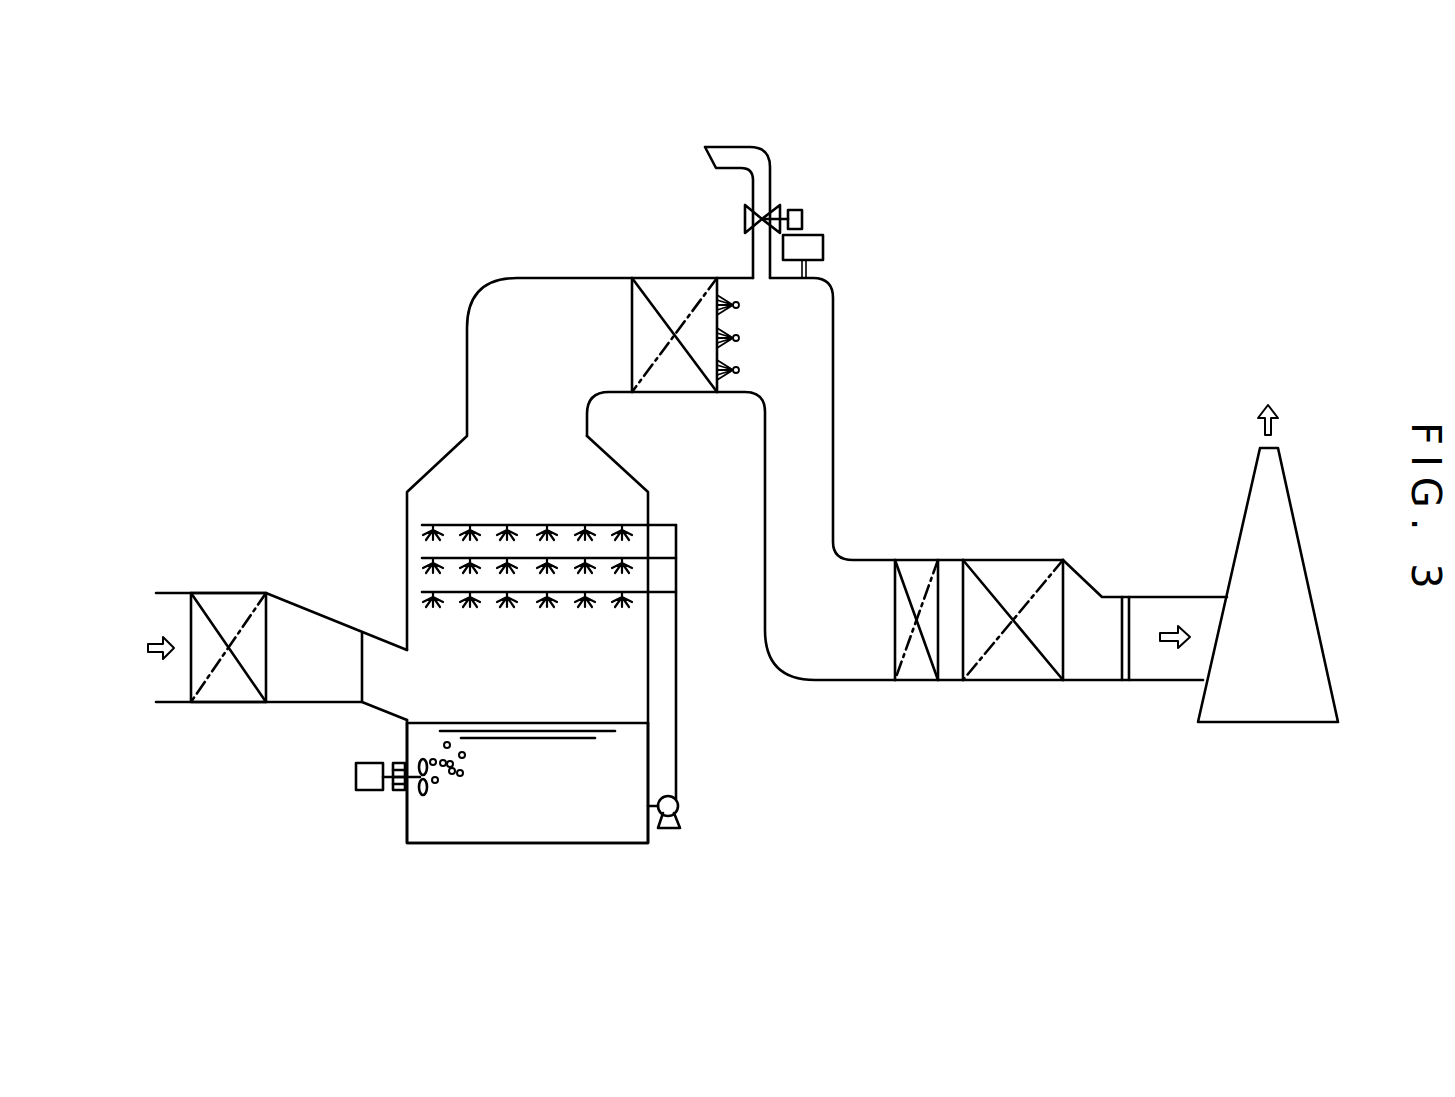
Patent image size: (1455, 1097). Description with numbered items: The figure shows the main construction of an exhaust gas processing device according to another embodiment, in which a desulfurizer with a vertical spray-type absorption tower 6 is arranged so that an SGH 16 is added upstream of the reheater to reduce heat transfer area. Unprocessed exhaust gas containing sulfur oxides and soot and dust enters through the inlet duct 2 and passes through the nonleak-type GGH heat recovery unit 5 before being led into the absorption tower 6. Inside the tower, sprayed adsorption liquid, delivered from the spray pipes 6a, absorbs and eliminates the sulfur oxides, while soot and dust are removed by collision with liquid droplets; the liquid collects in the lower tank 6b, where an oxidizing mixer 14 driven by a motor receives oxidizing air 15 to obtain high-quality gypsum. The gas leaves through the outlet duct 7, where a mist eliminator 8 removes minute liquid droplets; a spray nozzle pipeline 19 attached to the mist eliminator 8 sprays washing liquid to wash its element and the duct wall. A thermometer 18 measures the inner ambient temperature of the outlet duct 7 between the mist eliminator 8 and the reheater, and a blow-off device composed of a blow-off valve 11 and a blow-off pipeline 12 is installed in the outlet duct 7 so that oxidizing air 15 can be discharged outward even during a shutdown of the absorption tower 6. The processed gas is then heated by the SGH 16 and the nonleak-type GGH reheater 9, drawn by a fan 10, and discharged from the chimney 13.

The inlet duct 2 is at (167, 592).
The nonleak-type GGH heat recovery unit 5 is at (226, 592).
The absorption tower 6 is at (427, 472).
The spray nozzles / spray pipes 6a is at (556, 524).
The liquid reservoir tank 6b is at (406, 826).
The outlet duct 7 is at (833, 410).
The mist eliminator 8 is at (672, 277).
The nonleak-type GGH reheater 9 is at (1010, 559).
The fan 10 is at (1132, 612).
The blow-off valve 11 is at (803, 219).
The blow-off pipeline 12 is at (771, 166).
The chimney 13 is at (1258, 460).
The oxidizing mixer 14 is at (356, 777).
The oxidizing air 15 is at (398, 757).
The SGH (steam-gas heater) 16 is at (912, 559).
The thermometer 18 is at (824, 247).
The spray nozzle pipeline 19 is at (731, 378).